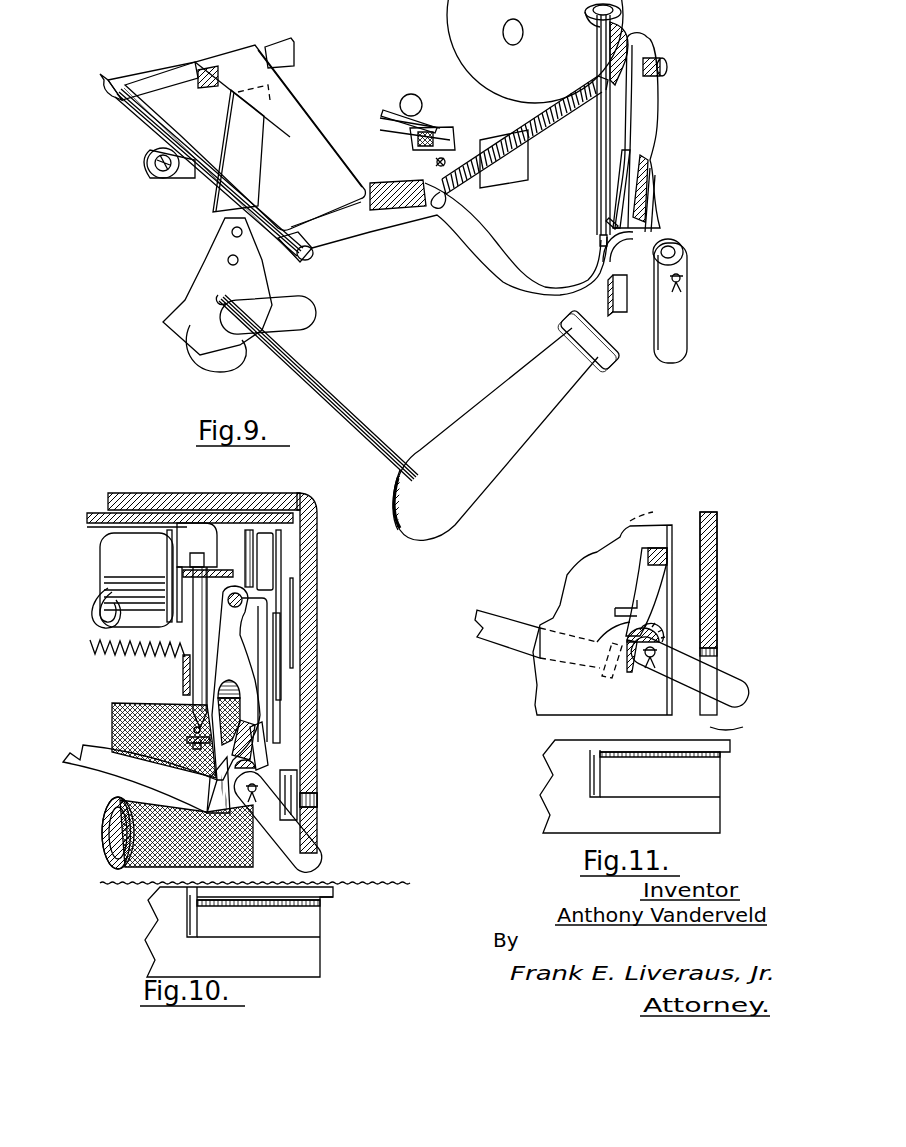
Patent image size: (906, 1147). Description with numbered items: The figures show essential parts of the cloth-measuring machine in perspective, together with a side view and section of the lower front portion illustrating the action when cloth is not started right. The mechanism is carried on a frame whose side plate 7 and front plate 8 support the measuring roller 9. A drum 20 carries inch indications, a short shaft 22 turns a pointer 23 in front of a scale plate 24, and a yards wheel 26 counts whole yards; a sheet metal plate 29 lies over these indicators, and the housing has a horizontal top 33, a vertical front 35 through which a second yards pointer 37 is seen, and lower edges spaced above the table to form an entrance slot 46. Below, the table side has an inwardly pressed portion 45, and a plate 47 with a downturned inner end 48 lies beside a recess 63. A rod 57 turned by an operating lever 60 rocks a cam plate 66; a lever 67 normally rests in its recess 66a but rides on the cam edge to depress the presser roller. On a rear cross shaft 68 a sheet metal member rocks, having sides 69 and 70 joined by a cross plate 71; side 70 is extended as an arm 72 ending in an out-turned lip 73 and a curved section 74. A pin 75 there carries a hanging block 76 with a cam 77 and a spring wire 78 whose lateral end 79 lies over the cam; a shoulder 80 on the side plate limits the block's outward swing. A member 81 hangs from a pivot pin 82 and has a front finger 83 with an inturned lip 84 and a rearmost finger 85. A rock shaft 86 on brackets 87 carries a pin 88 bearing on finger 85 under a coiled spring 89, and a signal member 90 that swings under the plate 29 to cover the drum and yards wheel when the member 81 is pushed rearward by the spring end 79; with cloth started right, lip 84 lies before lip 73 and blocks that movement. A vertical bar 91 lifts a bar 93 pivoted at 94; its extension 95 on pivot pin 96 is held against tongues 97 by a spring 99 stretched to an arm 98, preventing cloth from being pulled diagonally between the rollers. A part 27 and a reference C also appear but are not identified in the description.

In FIG. 11, the second vertical side plate 7 is at (577, 580).
In FIG. 10, the front vertical plate 8 is at (281, 613).
In FIG. 11, the front vertical plate 8 is at (670, 567).
In FIG. 10, the measuring roller 9 is at (117, 707).
In FIG. 9, the drum 20 is at (620, 37).
In FIG. 10, the drum 20 is at (210, 540).
In FIG. 10, the second short shaft 22 is at (241, 622).
In FIG. 10, the pointer or indicator 23 is at (294, 587).
In FIG. 10, the vertical plate 24 is at (282, 557).
In FIG. 10, the yards wheel 26 is at (274, 543).
In FIG. 10, the coil 27 is at (107, 550).
In FIG. 10, the sheet metal plate 29 is at (287, 513).
In FIG. 10, the horizontal top 33 is at (247, 500).
In FIG. 10, the vertical front 35 is at (318, 690).
In FIG. 11, the vertical front 35 is at (713, 530).
In FIG. 10, the second yards pointer 37 is at (298, 780).
In FIG. 10, the inwardly pressed portion 45 is at (260, 923).
In FIG. 11, the inwardly pressed portion 45 is at (673, 780).
In FIG. 10, the entrance slot 46 is at (313, 870).
In FIG. 11, the entrance slot 46 is at (740, 730).
In FIG. 10, the plate 47 is at (290, 890).
In FIG. 11, the plate 47 is at (657, 743).
In FIG. 10, the downwardly turned end 48 is at (198, 920).
In FIG. 11, the downwardly turned end 48 is at (590, 760).
In FIG. 9, the rod 57 is at (333, 397).
In FIG. 9, the operating lever 60 is at (500, 437).
In FIG. 10, the recess 63 is at (167, 913).
In FIG. 9, the cam plate 66 is at (253, 283).
In FIG. 9, the recess 66a is at (190, 322).
In FIG. 9, the lever 67 is at (237, 357).
In FIG. 9, the cross shaft 68 is at (213, 177).
In FIG. 9, the side 69 is at (190, 87).
In FIG. 9, the side 70 is at (370, 227).
In FIG. 9, the cross plate 71 is at (327, 157).
In FIG. 9, the arm 72 is at (510, 290).
In FIG. 10, the arm 72 is at (73, 763).
In FIG. 11, the arm 72 is at (503, 643).
In FIG. 9, the out turned lip 73 is at (614, 343).
In FIG. 10, the out turned lip 73 is at (207, 797).
In FIG. 11, the out turned lip 73 is at (600, 667).
In FIG. 9, the curved section 74 is at (603, 250).
In FIG. 11, the curved section 74 is at (658, 636).
In FIG. 9, the pin 75 is at (682, 280).
In FIG. 10, the pin 75 is at (254, 795).
In FIG. 11, the pin 75 is at (656, 655).
In FIG. 9, the short bar 76 is at (682, 323).
In FIG. 10, the short bar 76 is at (298, 853).
In FIG. 11, the short bar 76 is at (722, 682).
In FIG. 9, the cam 77 is at (627, 288).
In FIG. 10, the spring wire 78 is at (255, 763).
In FIG. 11, the spring wire 78 is at (645, 623).
In FIG. 9, the laterally turned end 79 is at (657, 236).
In FIG. 11, the shoulder 80 is at (628, 650).
In FIG. 9, the member 81 is at (647, 107).
In FIG. 10, the member 81 is at (258, 630).
In FIG. 9, the pivot pin 82 is at (663, 67).
In FIG. 10, the pivot pin 82 is at (243, 600).
In FIG. 9, the front finger 83 is at (653, 203).
In FIG. 10, the front finger 83 is at (255, 727).
In FIG. 11, the front finger 83 is at (655, 587).
In FIG. 9, the inturned lip 84 is at (647, 190).
In FIG. 10, the inturned lip 84 is at (262, 753).
In FIG. 11, the inturned lip 84 is at (633, 607).
In FIG. 9, the rearmost finger 85 is at (627, 180).
In FIG. 10, the rearmost finger 85 is at (216, 688).
In FIG. 10, the vertical rock shaft 86 is at (140, 578).
In FIG. 10, the brackets 87 is at (193, 590).
In FIG. 9, the horizontal pin 88 is at (597, 221).
In FIG. 10, the horizontal pin 88 is at (195, 728).
In FIG. 9, the coiled spring 89 is at (540, 133).
In FIG. 10, the coiled spring 89 is at (93, 653).
In FIG. 9, the signal member 90 is at (535, 51).
In FIG. 10, the signal member 90 is at (153, 525).
In FIG. 9, the vertical bar 91 is at (250, 147).
In FIG. 9, the bar 93 is at (273, 143).
In FIG. 9, the pivot 94 is at (167, 177).
In FIG. 9, the extension 95 is at (500, 167).
In FIG. 9, the pivot pin 96 is at (467, 143).
In FIG. 9, the tongues 97 is at (443, 130).
In FIG. 9, the arm 98 is at (390, 107).
In FIG. 9, the light spring 99 is at (427, 117).
In FIG. 10, the surface C is at (377, 883).